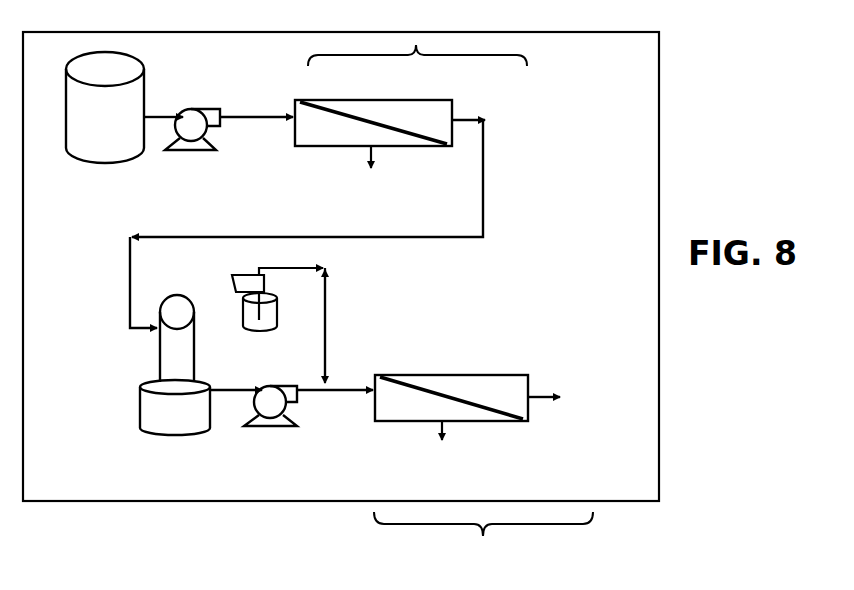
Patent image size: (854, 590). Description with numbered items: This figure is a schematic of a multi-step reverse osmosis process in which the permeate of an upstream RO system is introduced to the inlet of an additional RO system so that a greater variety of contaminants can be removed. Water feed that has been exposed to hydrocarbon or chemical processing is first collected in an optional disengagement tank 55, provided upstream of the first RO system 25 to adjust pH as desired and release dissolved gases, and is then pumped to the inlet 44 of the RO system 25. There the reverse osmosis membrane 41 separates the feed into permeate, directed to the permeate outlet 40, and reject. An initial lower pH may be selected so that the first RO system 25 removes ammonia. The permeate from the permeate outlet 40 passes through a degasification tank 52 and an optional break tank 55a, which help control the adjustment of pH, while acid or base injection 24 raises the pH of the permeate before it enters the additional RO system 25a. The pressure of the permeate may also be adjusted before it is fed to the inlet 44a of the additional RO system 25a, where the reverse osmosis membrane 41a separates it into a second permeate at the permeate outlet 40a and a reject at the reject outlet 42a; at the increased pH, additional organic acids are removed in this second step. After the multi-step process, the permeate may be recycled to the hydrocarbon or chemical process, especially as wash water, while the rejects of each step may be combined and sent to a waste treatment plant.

The RO system 25 is at (417, 37).
The disengagement tank 55 is at (75, 95).
The inlet 44 is at (230, 114).
The reverse osmosis membrane 41 is at (354, 99).
The permeate outlet 40 is at (484, 174).
The degasification tank 52 is at (157, 350).
The break tank 55a is at (140, 410).
The acid or base injection 24 is at (327, 334).
The inlet 44a is at (336, 383).
The reverse osmosis membrane 41a is at (440, 373).
The permeate outlet 40a is at (575, 385).
The reject outlet 42a is at (458, 447).
The additional RO system 25a is at (483, 546).